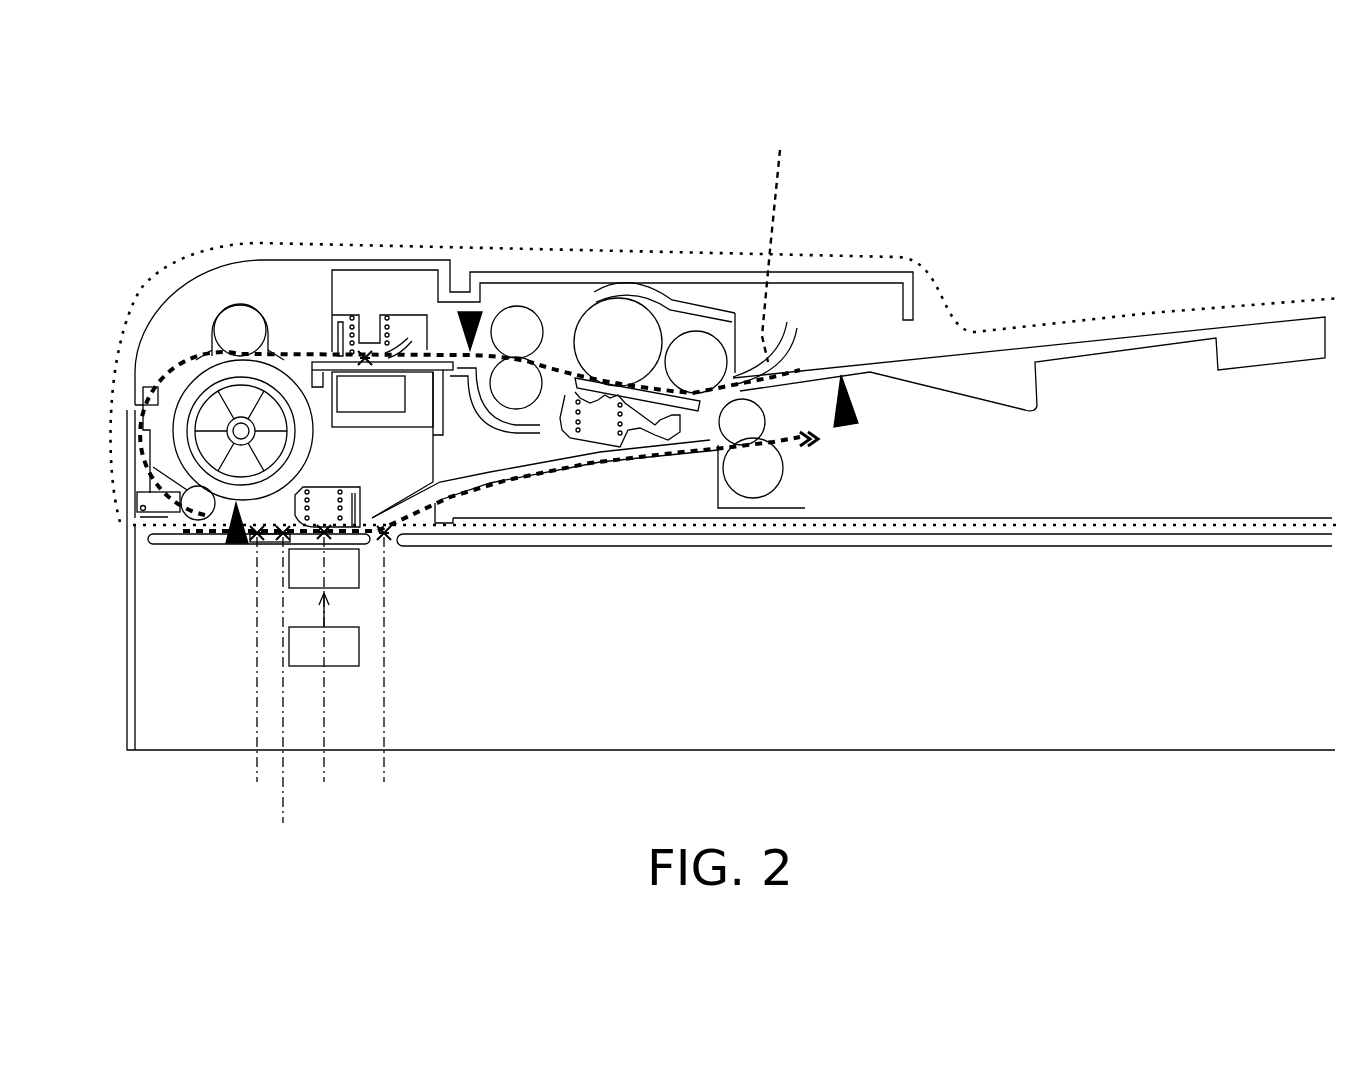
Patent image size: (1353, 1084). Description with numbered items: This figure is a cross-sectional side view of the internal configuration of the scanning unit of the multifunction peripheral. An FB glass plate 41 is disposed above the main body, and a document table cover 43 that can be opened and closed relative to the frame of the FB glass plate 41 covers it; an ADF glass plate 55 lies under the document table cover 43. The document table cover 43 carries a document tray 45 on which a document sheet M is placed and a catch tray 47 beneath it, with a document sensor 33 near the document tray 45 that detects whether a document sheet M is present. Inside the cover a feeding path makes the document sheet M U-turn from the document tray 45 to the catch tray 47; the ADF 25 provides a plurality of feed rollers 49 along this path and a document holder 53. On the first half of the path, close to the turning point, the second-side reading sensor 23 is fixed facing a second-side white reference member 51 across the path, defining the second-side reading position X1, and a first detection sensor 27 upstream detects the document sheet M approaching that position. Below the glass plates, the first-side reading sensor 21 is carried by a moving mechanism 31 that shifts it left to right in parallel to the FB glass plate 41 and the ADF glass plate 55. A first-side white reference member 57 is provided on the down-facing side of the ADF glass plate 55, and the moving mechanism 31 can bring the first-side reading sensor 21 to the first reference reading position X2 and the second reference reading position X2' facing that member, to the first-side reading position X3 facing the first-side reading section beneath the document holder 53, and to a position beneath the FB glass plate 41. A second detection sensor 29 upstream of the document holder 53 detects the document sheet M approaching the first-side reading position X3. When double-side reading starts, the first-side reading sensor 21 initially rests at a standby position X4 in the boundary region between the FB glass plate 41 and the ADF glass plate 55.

The first-side reading sensor 21 is at (350, 580).
The second-side reading sensor 23 is at (378, 402).
The ADF 25 is at (172, 342).
The first detection sensor 27 is at (470, 312).
The second detection sensor 29 is at (233, 545).
The moving mechanism 31 is at (315, 650).
The document sensor 33 is at (852, 425).
The FB glass plate 41 is at (1163, 535).
The document table cover 43 is at (870, 257).
The document tray 45 is at (1106, 344).
The catch tray 47 is at (801, 513).
The feed rollers 49 is at (258, 377).
The second-side white reference member 51 is at (400, 337).
The document holder 53 is at (307, 492).
The ADF glass plate 55 is at (155, 541).
The first-side white reference member 57 is at (270, 540).
The document sheet M is at (775, 239).
The second-side reading position X1 is at (365, 355).
The first reference reading position X2 is at (255, 673).
The second reference reading position X2' is at (287, 692).
The first-side reading position X3 is at (327, 672).
The standby position X4 is at (385, 673).